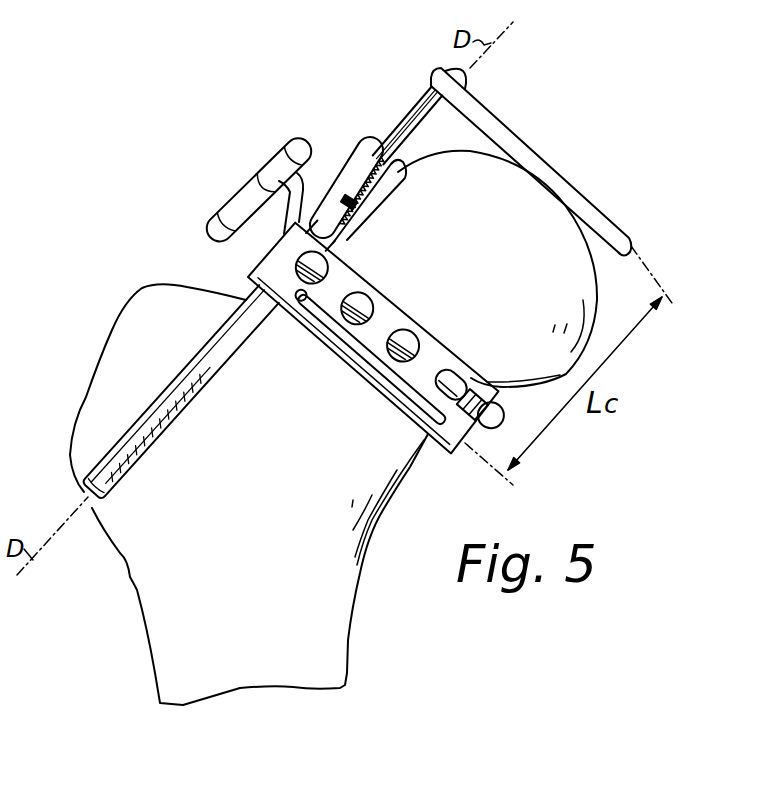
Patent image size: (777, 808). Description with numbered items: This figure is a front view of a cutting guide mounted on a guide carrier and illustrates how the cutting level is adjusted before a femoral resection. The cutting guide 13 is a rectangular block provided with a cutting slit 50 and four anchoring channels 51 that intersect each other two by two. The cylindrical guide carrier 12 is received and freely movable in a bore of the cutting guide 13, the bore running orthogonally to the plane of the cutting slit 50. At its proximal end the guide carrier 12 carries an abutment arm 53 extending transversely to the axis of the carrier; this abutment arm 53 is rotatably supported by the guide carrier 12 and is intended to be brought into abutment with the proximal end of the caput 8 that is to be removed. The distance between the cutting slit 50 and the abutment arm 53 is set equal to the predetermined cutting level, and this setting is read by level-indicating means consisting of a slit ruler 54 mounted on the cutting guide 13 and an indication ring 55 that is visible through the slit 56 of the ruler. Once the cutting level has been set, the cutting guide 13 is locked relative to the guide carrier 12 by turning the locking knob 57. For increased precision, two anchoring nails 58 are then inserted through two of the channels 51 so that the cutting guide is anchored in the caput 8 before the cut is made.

The caput 8 is at (590, 276).
The guide carrier 12 is at (170, 394).
The cutting guide 13 is at (438, 348).
The cutting slit 50 is at (358, 346).
The anchoring channels 51 is at (365, 306).
The abutment arm 53 is at (543, 153).
The slit ruler 54 is at (348, 165).
The indication ring 55 is at (345, 194).
The slit of the ruler 56 is at (390, 160).
The locking knob 57 is at (280, 187).
The anchoring nails 58 is at (462, 375).